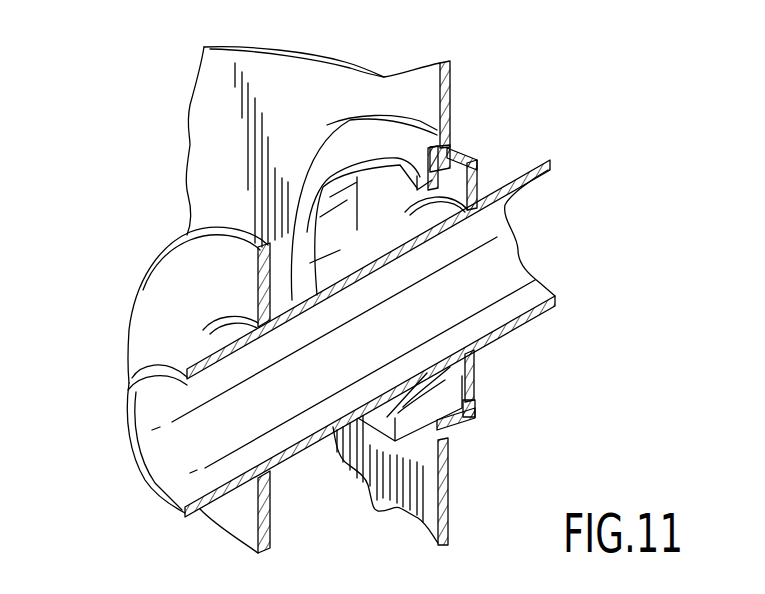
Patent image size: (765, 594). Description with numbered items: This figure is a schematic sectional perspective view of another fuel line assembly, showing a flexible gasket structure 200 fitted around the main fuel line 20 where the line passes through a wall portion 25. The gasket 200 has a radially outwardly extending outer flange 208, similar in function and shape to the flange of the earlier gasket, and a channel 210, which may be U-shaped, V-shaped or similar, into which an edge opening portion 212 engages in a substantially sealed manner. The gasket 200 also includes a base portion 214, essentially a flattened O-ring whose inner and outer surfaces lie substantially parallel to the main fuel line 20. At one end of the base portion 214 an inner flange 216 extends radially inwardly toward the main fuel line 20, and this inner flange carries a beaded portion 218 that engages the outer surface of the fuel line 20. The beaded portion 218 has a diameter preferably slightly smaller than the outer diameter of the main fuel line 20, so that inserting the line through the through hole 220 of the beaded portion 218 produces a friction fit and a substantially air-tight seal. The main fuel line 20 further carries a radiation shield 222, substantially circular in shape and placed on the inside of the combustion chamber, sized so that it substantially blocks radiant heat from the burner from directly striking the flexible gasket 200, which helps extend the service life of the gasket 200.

The main fuel line 20 is at (510, 270).
The plate 25 is at (203, 130).
The flexible gasket structure 200 is at (497, 145).
The outer flange 208 is at (413, 141).
The channel 210 is at (437, 128).
The edge opening portion 212 is at (447, 427).
The base portion 214 is at (460, 150).
The inner flange 216 is at (470, 205).
The beaded portion 218 is at (472, 352).
The through hole 220 is at (445, 428).
The radiation shield 222 is at (140, 308).